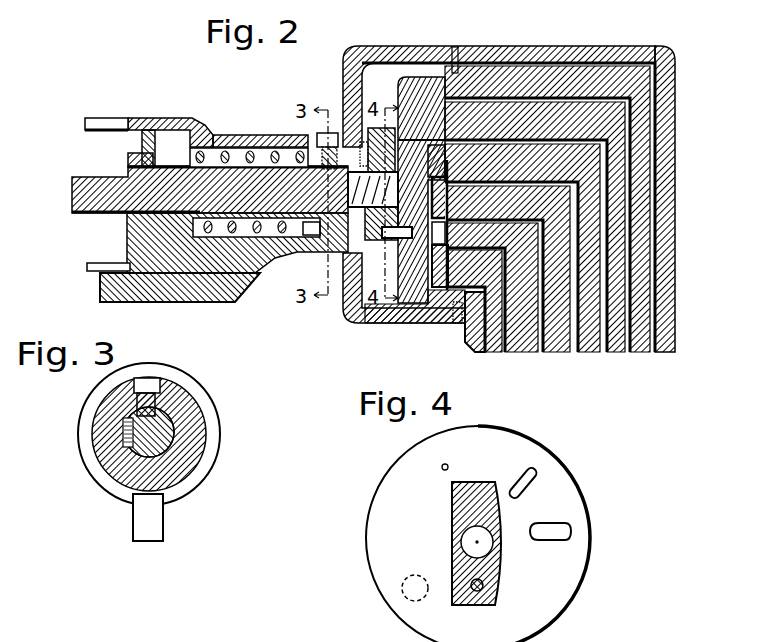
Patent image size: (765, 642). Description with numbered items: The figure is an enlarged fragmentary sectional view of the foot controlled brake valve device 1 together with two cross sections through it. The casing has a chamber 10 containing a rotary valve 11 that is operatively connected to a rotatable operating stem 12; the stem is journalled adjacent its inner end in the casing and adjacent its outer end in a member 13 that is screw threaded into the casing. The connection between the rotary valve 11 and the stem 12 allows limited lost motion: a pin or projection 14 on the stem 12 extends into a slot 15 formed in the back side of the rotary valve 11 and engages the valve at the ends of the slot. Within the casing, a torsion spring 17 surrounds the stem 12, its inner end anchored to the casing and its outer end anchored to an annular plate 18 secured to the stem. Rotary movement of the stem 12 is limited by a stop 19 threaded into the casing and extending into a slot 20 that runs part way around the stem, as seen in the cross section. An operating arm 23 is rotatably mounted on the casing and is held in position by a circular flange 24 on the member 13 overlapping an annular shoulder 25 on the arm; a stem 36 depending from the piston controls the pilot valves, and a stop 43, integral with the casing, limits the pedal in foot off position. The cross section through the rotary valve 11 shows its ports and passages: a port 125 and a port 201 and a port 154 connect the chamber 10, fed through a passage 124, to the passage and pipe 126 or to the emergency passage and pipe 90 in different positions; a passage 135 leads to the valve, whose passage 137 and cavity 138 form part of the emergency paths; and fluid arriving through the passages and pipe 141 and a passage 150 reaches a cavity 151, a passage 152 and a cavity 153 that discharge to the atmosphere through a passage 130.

In FIG. 2, the foot controlled brake valve device 1 is at (371, 57).
In FIG. 2, the chamber 10 is at (388, 70).
In FIG. 2, the rotary valve 11 is at (418, 87).
In FIG. 4, the rotary valve 11 is at (383, 522).
In FIG. 2, the rotatable operating stem 12 is at (80, 197).
In FIG. 3, the rotatable operating stem 12 is at (170, 432).
In FIG. 4, the rotatable operating stem 12 is at (462, 513).
In FIG. 2, the member 13 is at (128, 160).
In FIG. 2, the pin or projection 14 is at (388, 246).
In FIG. 4, the pin or projection 14 is at (485, 585).
In FIG. 2, the slot 15 is at (431, 233).
In FIG. 4, the slot 15 is at (470, 587).
In FIG. 2, the torsion spring 17 is at (252, 148).
In FIG. 2, the annular plate 18 is at (190, 242).
In FIG. 2, the stop 19 is at (333, 177).
In FIG. 3, the stop 19 is at (145, 403).
In FIG. 2, the slot 20 is at (327, 165).
In FIG. 3, the slot 20 is at (127, 433).
In FIG. 2, the operating arm 23 is at (100, 125).
In FIG. 2, the circular flange 24 is at (150, 142).
In FIG. 2, the annular shoulder 25 is at (144, 125).
In FIG. 2, the stem 36 is at (424, 225).
In FIG. 2, the stop 43 is at (107, 287).
In FIG. 3, the stop 43 is at (145, 523).
In FIG. 2, the passage and pipe 90 is at (577, 352).
In FIG. 2, the passage 124 is at (657, 327).
In FIG. 4, the port 125 is at (570, 528).
In FIG. 2, the passage and pipe 126 is at (545, 352).
In FIG. 2, the passage 130 is at (488, 353).
In FIG. 2, the passage 135 is at (630, 352).
In FIG. 2, the passage 137 is at (431, 198).
In FIG. 2, the cavity 138 is at (422, 161).
In FIG. 2, the passages and pipe 141 is at (610, 352).
In FIG. 2, the passage 150 is at (660, 352).
In FIG. 2, the cavity 151 is at (448, 245).
In FIG. 2, the passage 152 is at (442, 270).
In FIG. 2, the cavity 153 is at (442, 287).
In FIG. 4, the port 154 is at (448, 465).
In FIG. 2, the port 201 is at (408, 146).
In FIG. 4, the port 201 is at (535, 472).